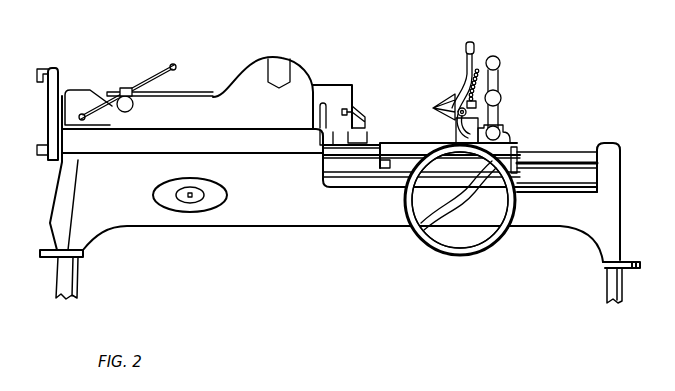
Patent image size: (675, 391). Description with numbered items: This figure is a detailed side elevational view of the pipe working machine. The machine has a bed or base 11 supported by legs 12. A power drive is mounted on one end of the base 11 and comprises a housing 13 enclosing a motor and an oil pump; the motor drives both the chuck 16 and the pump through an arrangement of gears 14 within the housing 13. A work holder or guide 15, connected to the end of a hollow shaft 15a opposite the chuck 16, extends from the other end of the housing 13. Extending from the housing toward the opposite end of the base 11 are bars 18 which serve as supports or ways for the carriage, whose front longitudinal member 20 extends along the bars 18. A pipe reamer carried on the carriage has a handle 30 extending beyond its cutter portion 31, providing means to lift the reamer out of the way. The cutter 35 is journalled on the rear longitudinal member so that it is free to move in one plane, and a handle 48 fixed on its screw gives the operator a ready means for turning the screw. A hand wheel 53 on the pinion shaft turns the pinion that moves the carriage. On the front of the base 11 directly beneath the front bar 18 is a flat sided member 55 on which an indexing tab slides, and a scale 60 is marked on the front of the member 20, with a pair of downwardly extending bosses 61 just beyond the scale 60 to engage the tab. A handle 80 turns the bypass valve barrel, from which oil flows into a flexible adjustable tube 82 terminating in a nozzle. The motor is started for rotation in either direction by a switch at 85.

The bed or base 11 is at (285, 219).
The legs 12 is at (78, 288).
The housing 13 is at (200, 113).
The gears 14 is at (152, 80).
The work holder or guide 15 is at (55, 77).
The hollow shaft 15a is at (62, 100).
The chuck 16 is at (333, 90).
The bars 18 is at (558, 155).
The front longitudinal carriage member 20 is at (398, 152).
The handle 30 is at (468, 45).
The cutter portion 31 is at (445, 100).
The cutter 35 is at (507, 94).
The handle 48 is at (500, 102).
The hand wheel 53 is at (472, 257).
The flat sided member 55 is at (352, 173).
The scale 60 is at (407, 163).
The bosses 61 is at (397, 150).
The handle 80 is at (456, 128).
The flexible adjustable tube 82 is at (478, 70).
The switch 85 is at (192, 200).